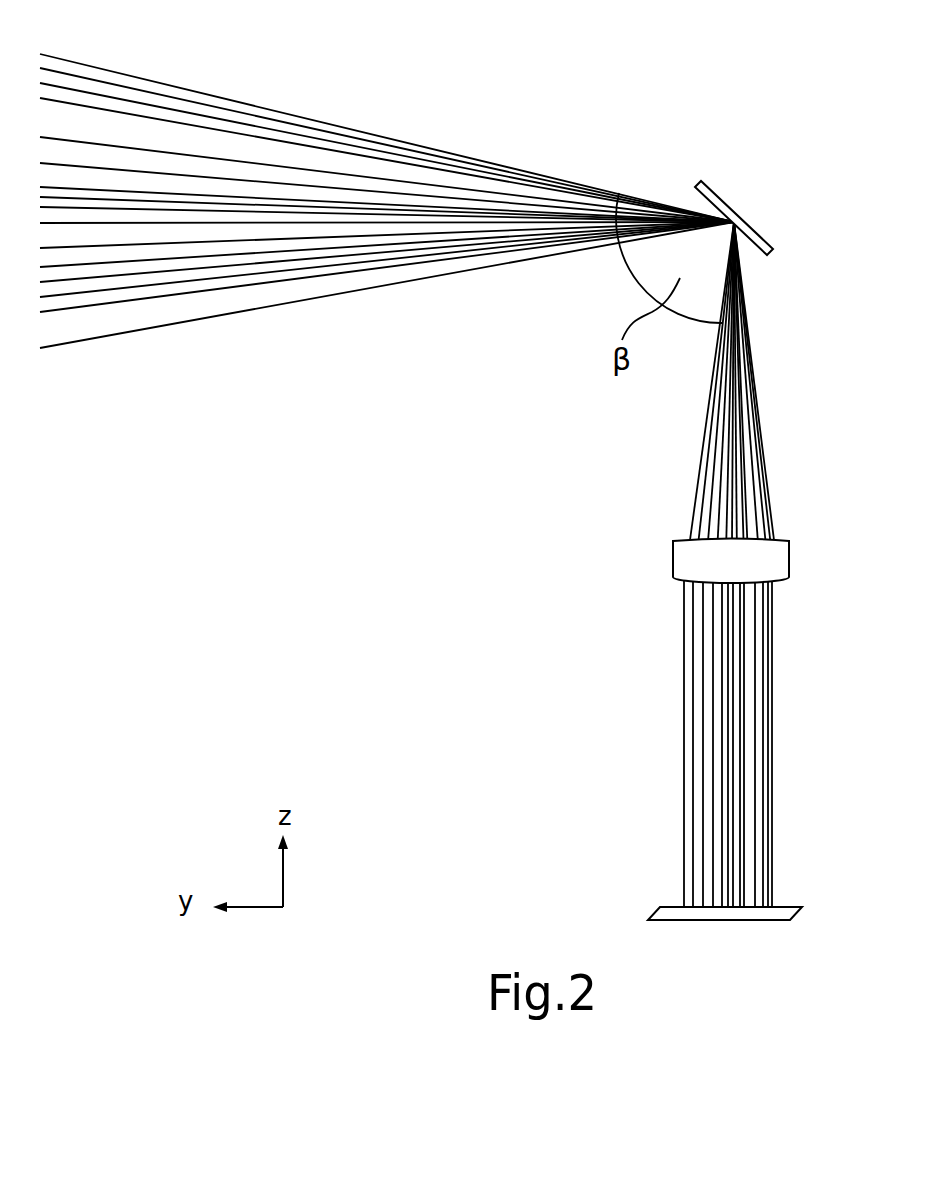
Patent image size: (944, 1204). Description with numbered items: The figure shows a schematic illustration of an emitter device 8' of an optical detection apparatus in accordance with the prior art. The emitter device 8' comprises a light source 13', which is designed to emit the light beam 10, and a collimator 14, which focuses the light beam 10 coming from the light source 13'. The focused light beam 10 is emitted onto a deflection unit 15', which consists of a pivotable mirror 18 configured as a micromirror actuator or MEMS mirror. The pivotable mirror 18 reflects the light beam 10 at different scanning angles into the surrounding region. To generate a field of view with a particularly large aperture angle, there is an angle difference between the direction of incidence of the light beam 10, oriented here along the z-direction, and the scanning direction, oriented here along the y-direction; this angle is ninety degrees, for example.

The emitter device 8' is at (453, 476).
The light beam 10 is at (459, 190).
The pivotable mirror 18 is at (720, 197).
The deflection unit 15' is at (809, 192).
The collimator 14 is at (780, 560).
The light source 13' is at (748, 884).